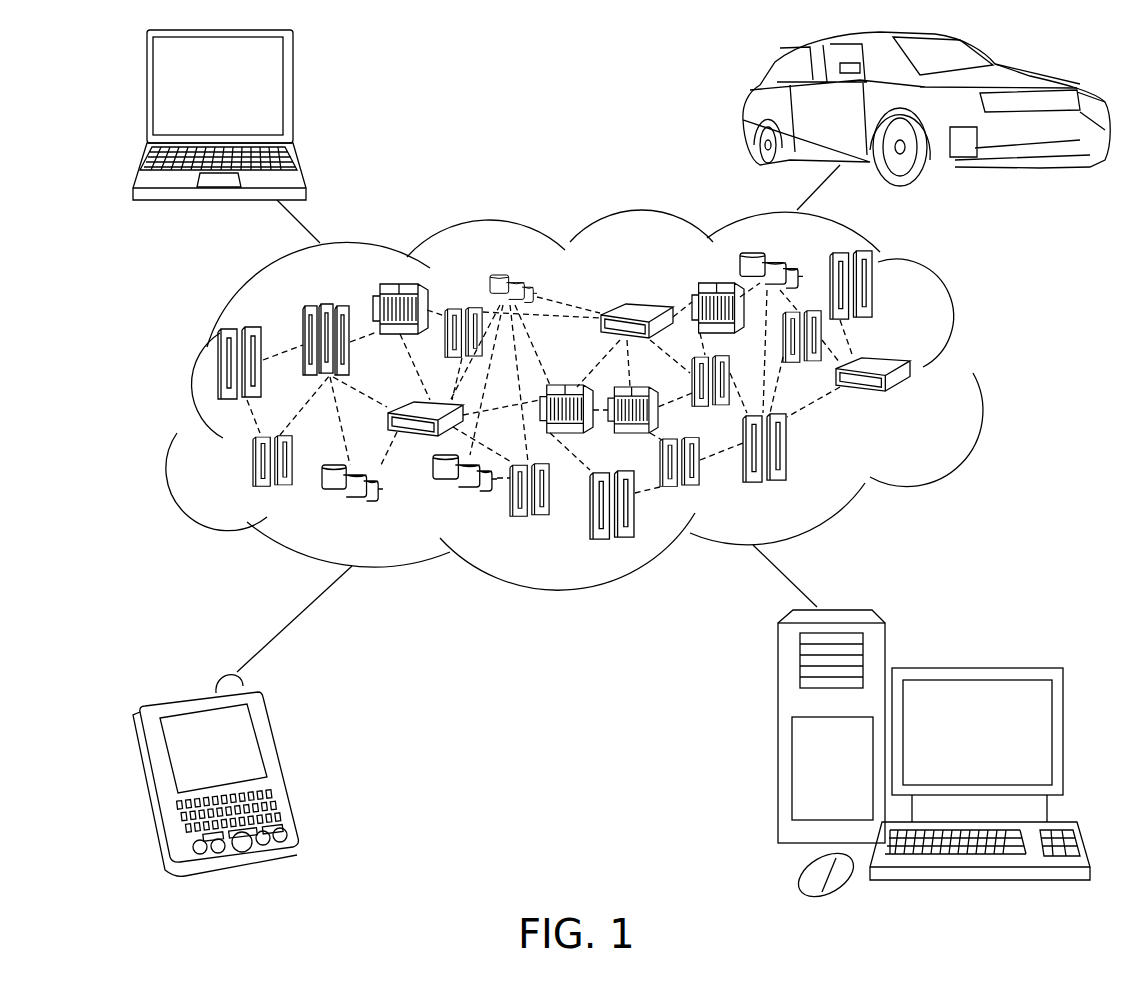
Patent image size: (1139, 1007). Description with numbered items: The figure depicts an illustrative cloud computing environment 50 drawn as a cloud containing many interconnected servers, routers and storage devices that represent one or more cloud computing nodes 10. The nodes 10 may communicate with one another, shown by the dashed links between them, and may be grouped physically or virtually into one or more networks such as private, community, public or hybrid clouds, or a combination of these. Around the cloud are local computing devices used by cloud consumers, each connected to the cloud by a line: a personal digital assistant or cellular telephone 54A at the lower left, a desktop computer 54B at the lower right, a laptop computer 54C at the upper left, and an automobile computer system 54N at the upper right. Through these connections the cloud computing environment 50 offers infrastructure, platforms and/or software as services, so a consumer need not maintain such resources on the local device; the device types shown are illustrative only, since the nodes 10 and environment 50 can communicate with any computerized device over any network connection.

The cloud computing nodes 10 is at (918, 404).
The cloud computing environment 50 is at (973, 373).
The personal digital assistant or cellular telephone 54A is at (283, 760).
The desktop computer 54B is at (975, 668).
The laptop computer 54C is at (293, 93).
The automobile computer system 54N is at (745, 112).